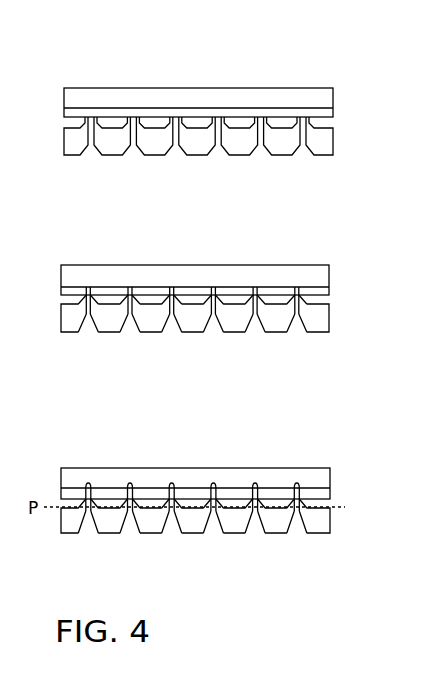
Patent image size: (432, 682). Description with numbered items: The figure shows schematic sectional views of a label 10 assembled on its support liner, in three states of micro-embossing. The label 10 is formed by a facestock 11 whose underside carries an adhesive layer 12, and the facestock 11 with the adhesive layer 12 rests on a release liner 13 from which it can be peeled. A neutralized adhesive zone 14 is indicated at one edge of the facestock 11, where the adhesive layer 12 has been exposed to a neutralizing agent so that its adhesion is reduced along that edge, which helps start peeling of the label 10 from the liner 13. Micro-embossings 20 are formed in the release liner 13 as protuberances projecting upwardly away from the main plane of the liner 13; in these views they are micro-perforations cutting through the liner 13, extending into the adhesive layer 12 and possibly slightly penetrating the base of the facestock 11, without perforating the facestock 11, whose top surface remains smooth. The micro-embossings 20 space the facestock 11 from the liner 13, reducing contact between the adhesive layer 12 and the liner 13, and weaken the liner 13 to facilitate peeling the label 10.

The label 10 is at (282, 76).
The facestock 11 is at (143, 103).
The adhesive layer 12 is at (365, 517).
The release liner 13 is at (325, 141).
The neutralized adhesive zone 14 is at (320, 112).
The micro-embossings 20 is at (306, 141).